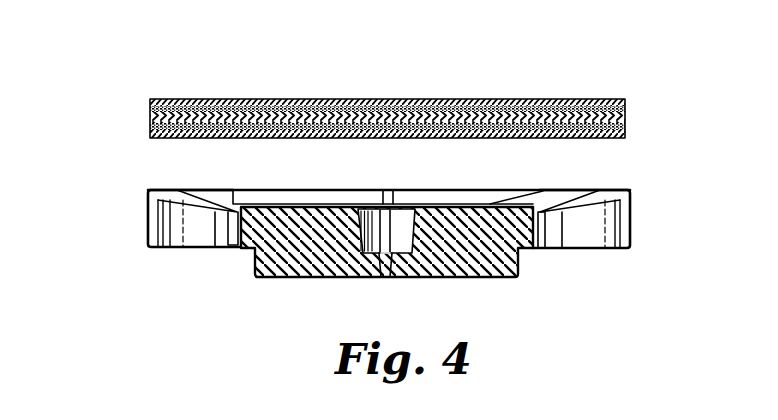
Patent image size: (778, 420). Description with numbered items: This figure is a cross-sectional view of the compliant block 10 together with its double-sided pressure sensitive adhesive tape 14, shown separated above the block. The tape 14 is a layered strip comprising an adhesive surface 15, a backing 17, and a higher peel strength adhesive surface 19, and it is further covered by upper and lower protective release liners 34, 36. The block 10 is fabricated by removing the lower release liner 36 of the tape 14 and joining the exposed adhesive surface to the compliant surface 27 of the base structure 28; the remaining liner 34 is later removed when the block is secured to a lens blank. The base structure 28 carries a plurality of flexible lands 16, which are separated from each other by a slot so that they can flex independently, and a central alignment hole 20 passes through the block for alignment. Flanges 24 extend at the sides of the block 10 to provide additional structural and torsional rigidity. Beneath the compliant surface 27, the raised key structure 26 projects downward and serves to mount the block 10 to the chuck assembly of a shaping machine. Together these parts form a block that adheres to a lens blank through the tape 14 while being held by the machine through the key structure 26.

The compliant block 10 is at (521, 66).
The double-sided pressure sensitive adhesive tape 14 is at (186, 94).
The adhesive surface 15 is at (625, 108).
The flexible lands 16 is at (405, 190).
The backing 17 is at (150, 117).
The higher peel strength adhesive surface 19 is at (625, 126).
The central alignment hole 20 is at (388, 256).
The flanges 24 is at (632, 217).
The raised key structure 26 is at (255, 268).
The compliant surface 27 is at (430, 198).
The base structure 28 is at (140, 216).
The upper protective release liner 34 is at (357, 99).
The lower protective release liner 36 is at (168, 138).